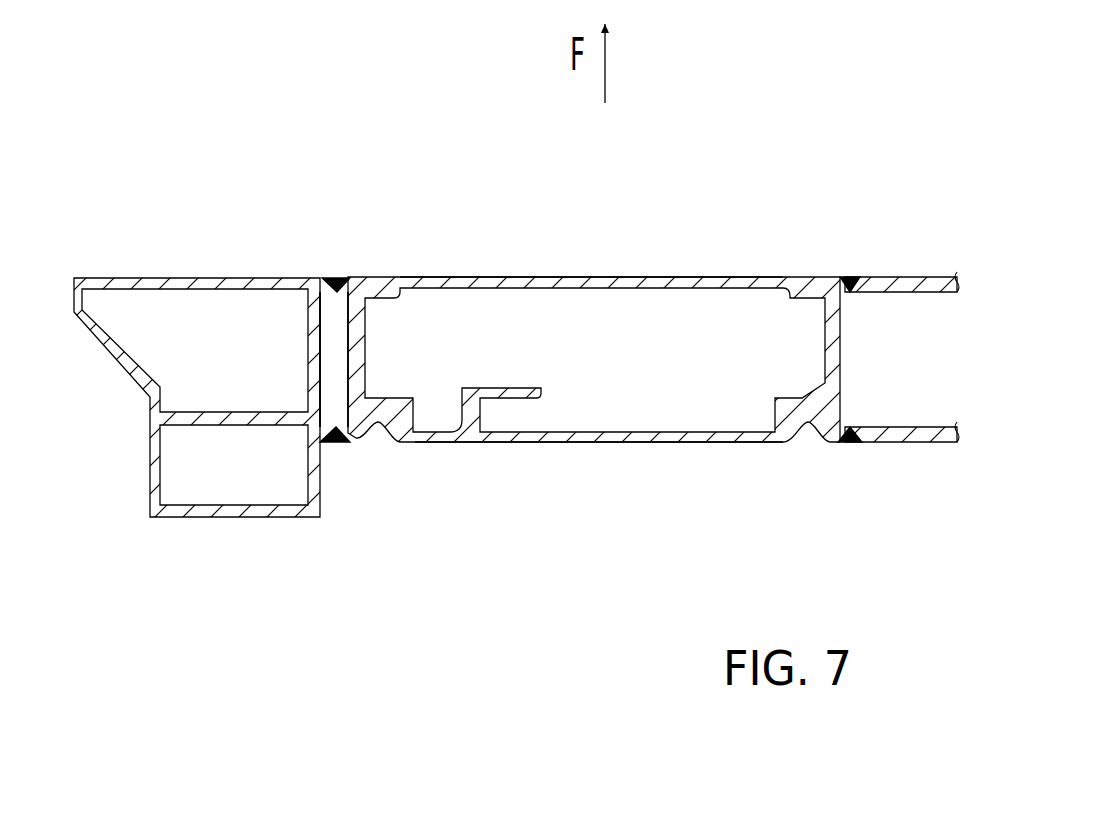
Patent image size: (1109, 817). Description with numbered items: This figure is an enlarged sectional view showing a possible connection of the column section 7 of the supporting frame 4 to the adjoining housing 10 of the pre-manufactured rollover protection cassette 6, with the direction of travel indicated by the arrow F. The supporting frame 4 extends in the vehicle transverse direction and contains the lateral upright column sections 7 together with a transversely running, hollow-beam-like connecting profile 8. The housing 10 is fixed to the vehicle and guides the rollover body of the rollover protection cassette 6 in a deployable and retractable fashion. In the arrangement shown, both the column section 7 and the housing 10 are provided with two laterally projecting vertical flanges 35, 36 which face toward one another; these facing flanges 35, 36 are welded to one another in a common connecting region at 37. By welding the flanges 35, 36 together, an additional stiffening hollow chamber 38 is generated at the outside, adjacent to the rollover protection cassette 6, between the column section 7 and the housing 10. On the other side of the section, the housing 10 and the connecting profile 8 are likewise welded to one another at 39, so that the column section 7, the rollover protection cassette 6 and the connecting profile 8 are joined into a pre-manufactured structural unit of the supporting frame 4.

The supporting frame 4 is at (718, 470).
The rollover protection cassette 6 is at (696, 268).
The column section 7 is at (163, 277).
The connecting profile 8 is at (930, 277).
The housing 10 is at (598, 276).
The vertical flange 35 is at (320, 279).
The vertical flange 36 is at (357, 279).
The connecting region 37 is at (338, 276).
The stiffening hollow chamber 38 is at (333, 345).
The weld 39 is at (857, 274).